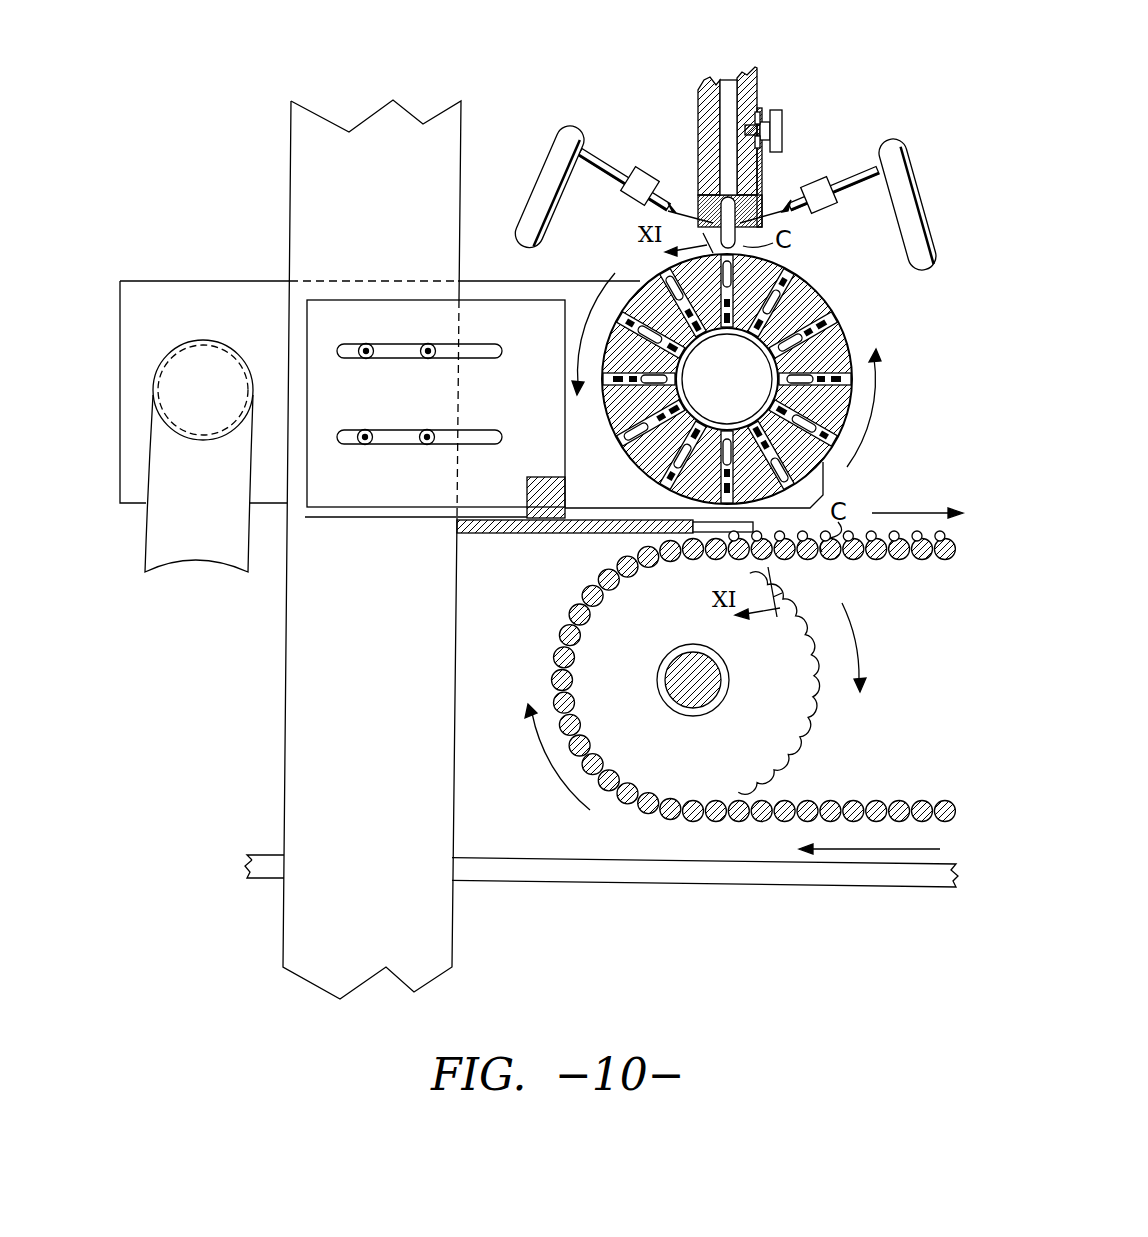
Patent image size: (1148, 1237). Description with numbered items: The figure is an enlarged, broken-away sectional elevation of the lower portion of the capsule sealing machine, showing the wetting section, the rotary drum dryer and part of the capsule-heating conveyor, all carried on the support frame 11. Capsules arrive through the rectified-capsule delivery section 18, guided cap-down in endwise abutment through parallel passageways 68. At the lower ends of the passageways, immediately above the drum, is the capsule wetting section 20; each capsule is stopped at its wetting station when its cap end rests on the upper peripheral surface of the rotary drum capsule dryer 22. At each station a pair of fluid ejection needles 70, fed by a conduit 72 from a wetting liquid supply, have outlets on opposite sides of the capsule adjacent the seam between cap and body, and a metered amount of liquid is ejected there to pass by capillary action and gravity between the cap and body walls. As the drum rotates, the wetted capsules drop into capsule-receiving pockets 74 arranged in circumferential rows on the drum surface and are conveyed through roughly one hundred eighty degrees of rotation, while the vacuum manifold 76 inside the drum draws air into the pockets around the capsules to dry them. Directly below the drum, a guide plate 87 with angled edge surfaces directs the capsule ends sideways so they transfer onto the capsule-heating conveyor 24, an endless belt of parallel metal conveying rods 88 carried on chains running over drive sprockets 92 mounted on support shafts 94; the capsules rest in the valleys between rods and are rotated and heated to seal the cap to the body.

The support frame 11 is at (333, 300).
The rectified-capsule delivery section 18 is at (764, 92).
The capsule wetting section 20 is at (803, 169).
The rotary drum capsule dryer 22 is at (770, 379).
The capsule-heating conveyor 24 is at (641, 850).
The passageways 68 is at (731, 88).
The fluid ejection needles 70 is at (673, 187).
The conduit 72 is at (532, 192).
The capsule-receiving pockets 74 is at (797, 280).
The vacuum manifold 76 is at (727, 379).
The guide plate 87 is at (588, 535).
The conveying rods 88 is at (943, 562).
The drive sprockets 92 is at (774, 731).
The support shafts 94 is at (697, 655).